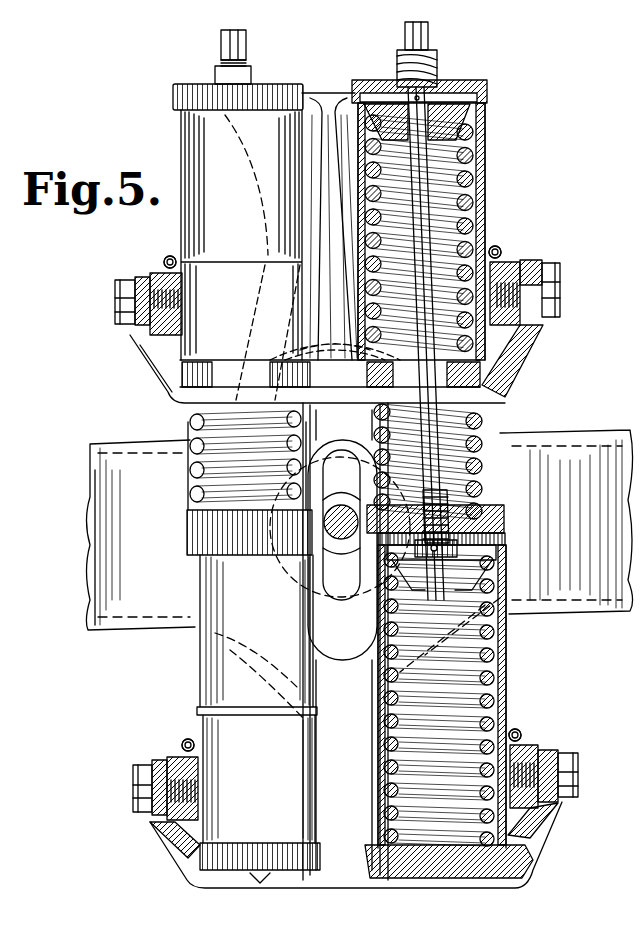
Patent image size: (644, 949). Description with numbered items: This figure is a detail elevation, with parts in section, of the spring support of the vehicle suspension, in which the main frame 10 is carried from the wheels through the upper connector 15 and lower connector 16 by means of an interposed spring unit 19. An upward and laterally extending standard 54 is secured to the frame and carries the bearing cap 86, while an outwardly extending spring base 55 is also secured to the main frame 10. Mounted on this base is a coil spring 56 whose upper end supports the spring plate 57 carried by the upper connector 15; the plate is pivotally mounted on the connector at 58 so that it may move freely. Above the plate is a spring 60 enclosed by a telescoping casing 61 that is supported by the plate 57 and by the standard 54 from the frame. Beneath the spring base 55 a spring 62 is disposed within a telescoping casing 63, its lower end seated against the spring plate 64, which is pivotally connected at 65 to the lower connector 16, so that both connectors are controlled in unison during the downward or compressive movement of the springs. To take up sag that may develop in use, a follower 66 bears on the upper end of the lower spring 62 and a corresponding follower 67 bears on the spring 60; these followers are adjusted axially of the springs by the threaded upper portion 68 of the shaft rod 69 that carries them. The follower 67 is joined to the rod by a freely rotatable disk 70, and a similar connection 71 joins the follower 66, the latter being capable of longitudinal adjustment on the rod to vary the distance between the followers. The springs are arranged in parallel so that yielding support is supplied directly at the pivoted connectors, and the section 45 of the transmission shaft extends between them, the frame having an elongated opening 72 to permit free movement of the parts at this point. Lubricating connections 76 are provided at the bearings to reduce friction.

The main frame 10 is at (95, 522).
The upper connector 15 is at (165, 258).
The lower connector 16 is at (186, 740).
The spring unit 19 is at (220, 640).
The section of the transmission shaft 45 is at (300, 575).
The standard 54 is at (308, 105).
The spring base 55 is at (190, 540).
The coil spring 56 is at (200, 468).
The spring plate 57 is at (165, 392).
The pivotal mounting 58 is at (128, 300).
The spring 60 is at (485, 200).
The telescoping casing 61 is at (205, 212).
The spring 62 is at (505, 600).
The telescoping casing 63 is at (486, 165).
The spring plate 64 is at (417, 848).
The pivotal connection 65 is at (165, 780).
The follower 66 is at (530, 548).
The follower 67 is at (373, 100).
The threaded upper portion 68 is at (440, 72).
The shaft rod 69 is at (222, 45).
The freely rotatable disk 70 is at (372, 112).
The connection 71 is at (505, 538).
The elongated opening 72 is at (342, 550).
The lubricating connections 76 is at (160, 262).
The bearing cap 86 is at (176, 97).